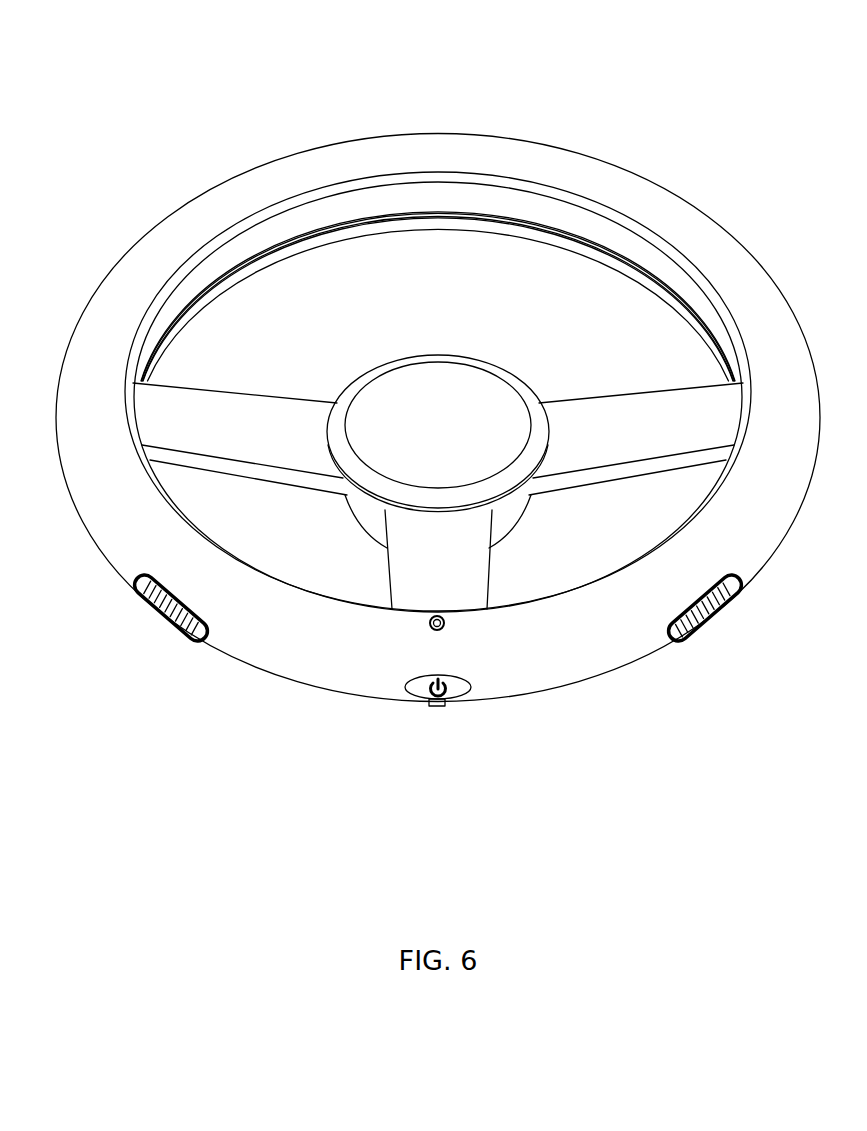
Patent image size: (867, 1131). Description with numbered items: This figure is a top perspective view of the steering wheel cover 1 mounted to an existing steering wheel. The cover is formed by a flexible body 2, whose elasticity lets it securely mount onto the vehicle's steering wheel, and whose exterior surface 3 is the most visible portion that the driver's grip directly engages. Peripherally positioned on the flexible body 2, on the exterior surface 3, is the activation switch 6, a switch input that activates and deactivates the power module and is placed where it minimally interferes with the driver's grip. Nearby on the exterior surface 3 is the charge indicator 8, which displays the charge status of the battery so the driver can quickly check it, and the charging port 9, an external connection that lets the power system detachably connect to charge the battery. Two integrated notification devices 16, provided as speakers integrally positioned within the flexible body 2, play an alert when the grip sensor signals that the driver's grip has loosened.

The steering wheel cover 1 is at (624, 112).
The flexible body 2 is at (447, 166).
The exterior surface 3 is at (708, 215).
The activation switch 6 is at (470, 684).
The charge indicator 8 is at (430, 631).
The charging port 9 is at (446, 704).
The integrated notification device 16 is at (190, 612).